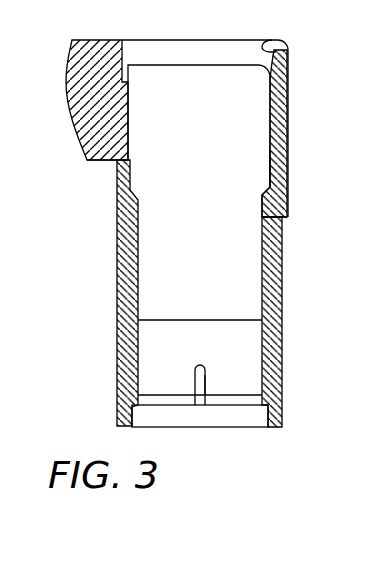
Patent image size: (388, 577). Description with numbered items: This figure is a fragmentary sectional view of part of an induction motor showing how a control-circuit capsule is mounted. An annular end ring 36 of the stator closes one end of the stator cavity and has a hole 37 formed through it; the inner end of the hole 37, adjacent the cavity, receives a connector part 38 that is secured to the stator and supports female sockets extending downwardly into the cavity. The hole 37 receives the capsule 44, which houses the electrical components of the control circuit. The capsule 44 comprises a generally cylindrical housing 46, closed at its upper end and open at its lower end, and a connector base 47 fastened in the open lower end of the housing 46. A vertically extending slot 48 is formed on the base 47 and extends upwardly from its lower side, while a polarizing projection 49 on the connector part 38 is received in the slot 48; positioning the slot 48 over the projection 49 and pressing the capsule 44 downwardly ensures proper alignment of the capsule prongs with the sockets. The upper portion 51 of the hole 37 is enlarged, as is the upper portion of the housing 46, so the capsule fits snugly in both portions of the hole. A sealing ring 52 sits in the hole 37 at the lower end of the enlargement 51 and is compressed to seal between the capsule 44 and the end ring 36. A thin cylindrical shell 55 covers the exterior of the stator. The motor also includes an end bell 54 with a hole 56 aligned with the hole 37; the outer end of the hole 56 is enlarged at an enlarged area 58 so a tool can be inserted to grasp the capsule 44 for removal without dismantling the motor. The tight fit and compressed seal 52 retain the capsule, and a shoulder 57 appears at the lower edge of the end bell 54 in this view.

The annular end ring 36 is at (115, 232).
The hole 37 is at (262, 275).
The connector part 38 is at (250, 440).
The capsule 44 is at (210, 205).
The cylindrical housing 46 is at (283, 128).
The connector base 47 is at (252, 343).
The slot 48 is at (196, 368).
The polarizing projection 49 is at (208, 382).
The upper portion of the hole 51 is at (270, 168).
The sealing ring 52 is at (265, 212).
The end bell 54 is at (70, 77).
The cylindrical shell 55 is at (270, 193).
The hole 56 is at (272, 102).
The shoulder 57 is at (90, 163).
The enlarged area 58 is at (262, 40).